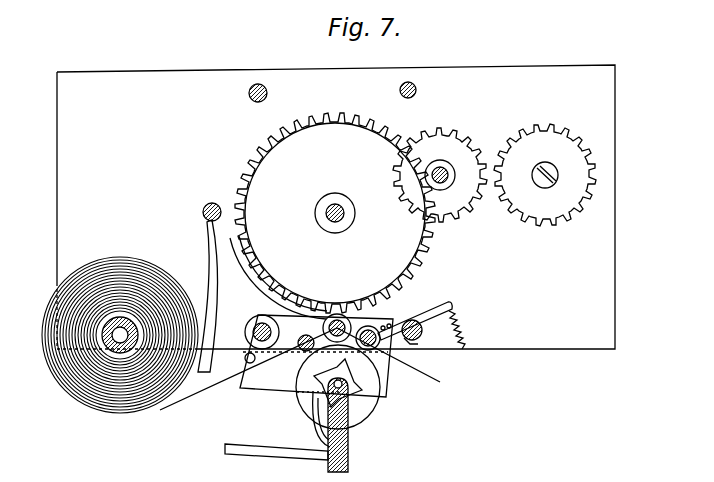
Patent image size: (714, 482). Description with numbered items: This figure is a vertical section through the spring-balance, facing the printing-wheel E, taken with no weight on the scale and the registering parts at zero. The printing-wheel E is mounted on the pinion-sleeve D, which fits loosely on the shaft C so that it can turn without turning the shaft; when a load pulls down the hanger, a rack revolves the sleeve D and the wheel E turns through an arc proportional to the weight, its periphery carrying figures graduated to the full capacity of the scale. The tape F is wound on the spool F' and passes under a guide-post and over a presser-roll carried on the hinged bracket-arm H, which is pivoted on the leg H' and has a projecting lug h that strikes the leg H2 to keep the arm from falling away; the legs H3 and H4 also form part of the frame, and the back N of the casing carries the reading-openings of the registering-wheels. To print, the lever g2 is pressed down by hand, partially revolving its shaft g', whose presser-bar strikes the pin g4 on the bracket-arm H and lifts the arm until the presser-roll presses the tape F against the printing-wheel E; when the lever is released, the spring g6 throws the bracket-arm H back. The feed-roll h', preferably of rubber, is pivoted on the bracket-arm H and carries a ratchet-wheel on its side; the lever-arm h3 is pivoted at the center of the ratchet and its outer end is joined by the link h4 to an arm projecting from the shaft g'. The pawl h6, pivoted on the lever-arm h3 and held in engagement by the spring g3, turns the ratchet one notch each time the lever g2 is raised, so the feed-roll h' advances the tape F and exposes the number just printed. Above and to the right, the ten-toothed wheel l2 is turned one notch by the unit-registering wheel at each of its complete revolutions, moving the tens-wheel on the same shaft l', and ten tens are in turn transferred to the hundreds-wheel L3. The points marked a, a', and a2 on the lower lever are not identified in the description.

The back N is at (563, 335).
The spool F' is at (103, 335).
The tape F is at (299, 373).
The printing-wheel E is at (335, 213).
The shaft C is at (348, 213).
The pinion-sleeve D is at (329, 218).
The hinged bracket-arm H is at (305, 362).
The leg H' is at (249, 330).
The leg H2 is at (420, 344).
The leg H3 is at (249, 96).
The leg H4 is at (400, 93).
The shaft l' is at (444, 168).
The wheel l2 is at (440, 175).
The hundreds-wheel L3 is at (545, 175).
The shaft g' is at (199, 205).
The lever g2 is at (214, 296).
The spring g3 is at (328, 428).
The pin g4 is at (245, 359).
The spring g6 is at (463, 326).
The projecting lug h is at (391, 337).
The feed-roll h' is at (356, 387).
The lever-arm h3 is at (350, 438).
The link h4 is at (270, 452).
The pawl h6 is at (313, 400).
The pin a is at (298, 336).
The pivot pin a' is at (347, 323).
The pin a2 is at (374, 327).